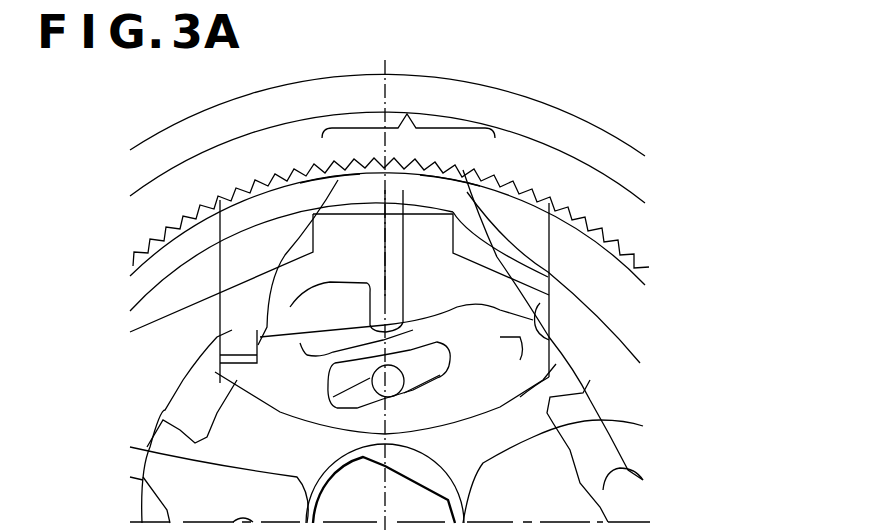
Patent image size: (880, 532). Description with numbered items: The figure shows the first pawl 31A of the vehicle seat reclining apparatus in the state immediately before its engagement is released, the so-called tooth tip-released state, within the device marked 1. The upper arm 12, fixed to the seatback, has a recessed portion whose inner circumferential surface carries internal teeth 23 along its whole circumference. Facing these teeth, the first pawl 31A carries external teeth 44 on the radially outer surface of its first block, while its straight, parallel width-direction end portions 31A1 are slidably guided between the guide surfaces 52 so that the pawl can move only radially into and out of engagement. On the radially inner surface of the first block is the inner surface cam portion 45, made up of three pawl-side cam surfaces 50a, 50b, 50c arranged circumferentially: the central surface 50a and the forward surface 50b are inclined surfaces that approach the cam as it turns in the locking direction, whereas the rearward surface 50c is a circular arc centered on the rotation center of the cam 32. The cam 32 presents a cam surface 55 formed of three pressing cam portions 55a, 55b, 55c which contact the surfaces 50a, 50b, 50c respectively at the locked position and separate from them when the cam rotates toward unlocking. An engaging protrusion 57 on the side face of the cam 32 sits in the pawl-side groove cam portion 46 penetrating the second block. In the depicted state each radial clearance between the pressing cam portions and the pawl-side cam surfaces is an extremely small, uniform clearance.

The electric motor / rotating electrical machine 1 is at (560, 115).
The upper arm 12 is at (578, 158).
The internal teeth 23 is at (520, 198).
The first pawl 31A is at (552, 256).
The width-direction end portions 31A1 is at (220, 314).
The cam 32 is at (220, 425).
The external teeth 44 is at (517, 182).
The inner surface cam portion 45 is at (316, 348).
The pawl-side groove cam portion 46 is at (448, 380).
The pawl-side cam surface 50a is at (366, 324).
The pawl-side cam surface 50b is at (220, 363).
The pawl-side cam surface 50c is at (549, 365).
The guide surfaces 52 is at (226, 270).
The cam surface 55 is at (407, 114).
The pressing cam portion 55a is at (410, 175).
The pressing cam portion 55b is at (337, 157).
The pressing cam portion 55c is at (466, 176).
The engaging protrusions 57 is at (337, 390).